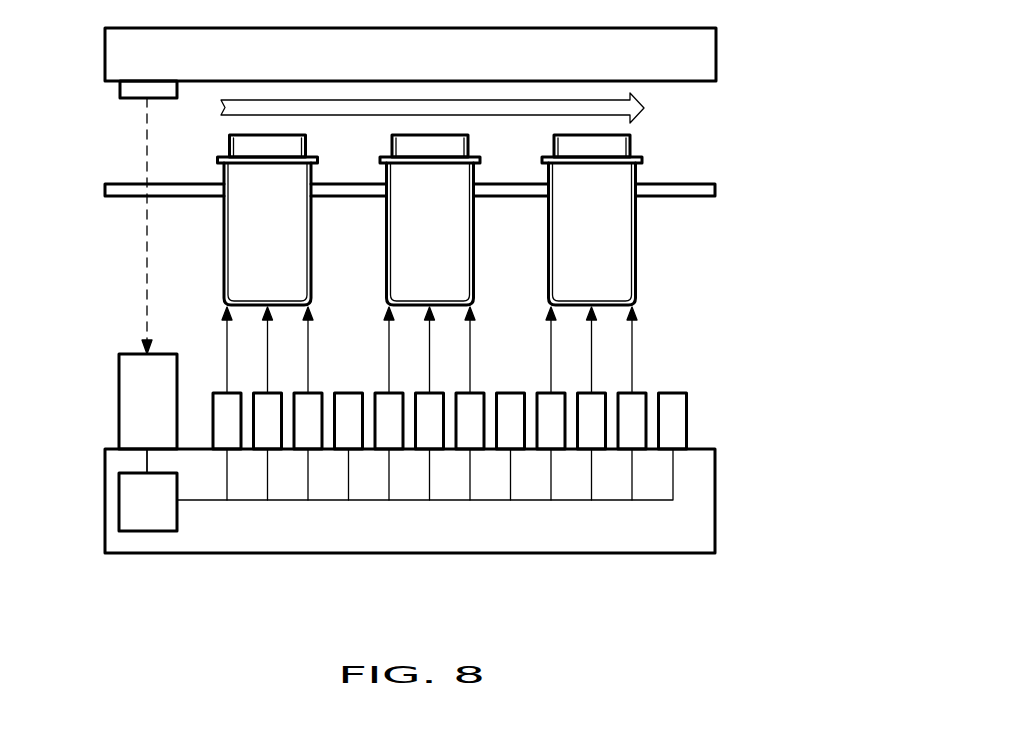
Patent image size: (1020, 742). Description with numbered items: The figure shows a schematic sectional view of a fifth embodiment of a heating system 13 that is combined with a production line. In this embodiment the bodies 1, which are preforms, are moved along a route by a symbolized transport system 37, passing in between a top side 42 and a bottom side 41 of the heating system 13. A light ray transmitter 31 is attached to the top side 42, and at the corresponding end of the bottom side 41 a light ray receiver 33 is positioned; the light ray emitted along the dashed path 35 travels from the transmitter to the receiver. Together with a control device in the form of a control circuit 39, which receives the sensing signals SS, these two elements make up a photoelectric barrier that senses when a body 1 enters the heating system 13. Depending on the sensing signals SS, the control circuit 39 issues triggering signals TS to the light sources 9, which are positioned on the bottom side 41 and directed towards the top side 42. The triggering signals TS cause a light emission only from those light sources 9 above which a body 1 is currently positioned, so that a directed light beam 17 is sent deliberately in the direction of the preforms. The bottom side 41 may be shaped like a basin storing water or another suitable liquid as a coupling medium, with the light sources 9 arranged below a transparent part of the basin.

The top side 42 is at (708, 44).
The light ray transmitter 31 is at (125, 90).
The sensing path 35 is at (147, 250).
The transport system 37 is at (672, 186).
The body 1 is at (236, 220).
The directed light beam 17 is at (227, 352).
The light source 9 is at (232, 399).
The bottom side 41 is at (540, 553).
The triggering signal TS is at (208, 500).
The light ray receiver 33 is at (125, 398).
The control circuit 39 is at (125, 505).
The sensing signal SS is at (147, 458).
The heating system 13 is at (733, 257).